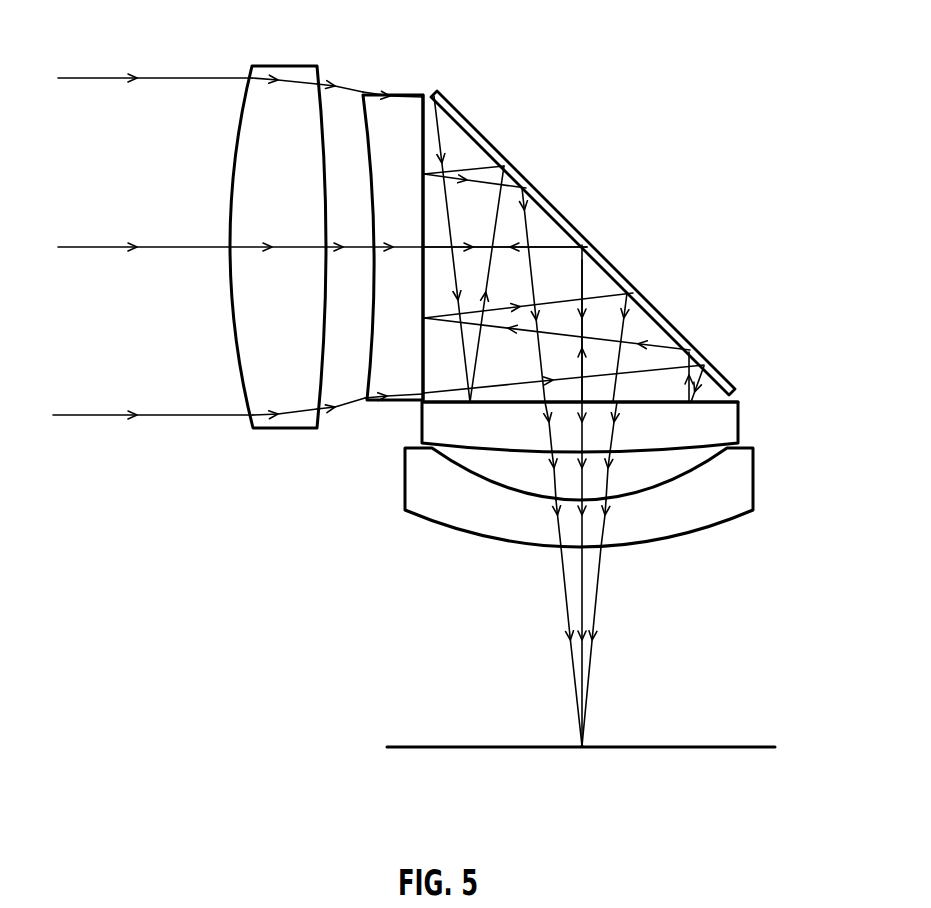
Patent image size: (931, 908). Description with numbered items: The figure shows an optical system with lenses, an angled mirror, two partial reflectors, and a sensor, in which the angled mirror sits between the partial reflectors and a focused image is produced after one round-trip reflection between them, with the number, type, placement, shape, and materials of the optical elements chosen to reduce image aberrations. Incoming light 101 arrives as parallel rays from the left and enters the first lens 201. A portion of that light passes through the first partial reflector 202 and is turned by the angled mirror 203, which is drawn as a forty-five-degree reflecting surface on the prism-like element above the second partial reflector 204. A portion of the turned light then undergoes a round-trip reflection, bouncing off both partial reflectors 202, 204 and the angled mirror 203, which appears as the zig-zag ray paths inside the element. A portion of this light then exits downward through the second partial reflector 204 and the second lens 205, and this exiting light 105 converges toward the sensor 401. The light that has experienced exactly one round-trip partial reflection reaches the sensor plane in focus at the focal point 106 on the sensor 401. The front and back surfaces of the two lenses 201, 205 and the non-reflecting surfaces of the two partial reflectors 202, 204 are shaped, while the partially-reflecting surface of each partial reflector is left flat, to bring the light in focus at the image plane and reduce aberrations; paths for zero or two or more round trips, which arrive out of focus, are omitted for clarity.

The incoming light 101 is at (102, 78).
The first lens 201 is at (298, 77).
The first partial reflector 202 is at (397, 105).
The angled mirror 203 is at (473, 127).
The second partial reflector 204 is at (722, 422).
The second lens 205 is at (735, 487).
The light exiting the second partial reflector 105 is at (565, 618).
The focal point 106 is at (581, 748).
The sensor 401 is at (732, 747).